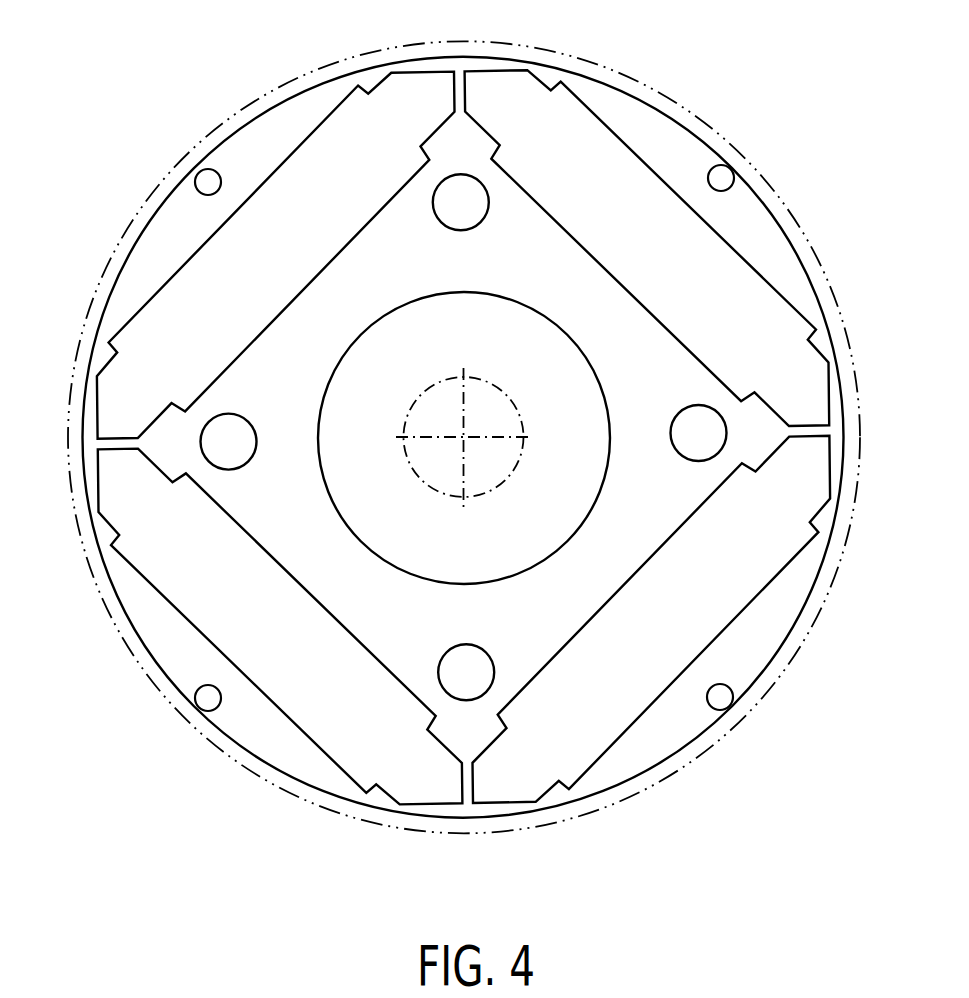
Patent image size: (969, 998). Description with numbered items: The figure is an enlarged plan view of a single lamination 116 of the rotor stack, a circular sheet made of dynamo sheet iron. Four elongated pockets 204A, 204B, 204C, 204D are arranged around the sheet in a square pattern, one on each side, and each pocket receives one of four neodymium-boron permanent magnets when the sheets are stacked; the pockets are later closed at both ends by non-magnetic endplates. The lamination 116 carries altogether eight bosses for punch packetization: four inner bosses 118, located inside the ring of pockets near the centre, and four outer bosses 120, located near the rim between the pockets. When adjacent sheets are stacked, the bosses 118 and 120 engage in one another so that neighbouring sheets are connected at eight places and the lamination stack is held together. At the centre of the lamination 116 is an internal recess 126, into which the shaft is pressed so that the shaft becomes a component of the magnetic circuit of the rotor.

The lamination 116 is at (172, 78).
The inner bosses 118 is at (433, 203).
The outer bosses 120 is at (196, 183).
The internal recess 126 is at (565, 538).
The pocket 204A is at (632, 152).
The pocket 204B is at (658, 699).
The pocket 204C is at (284, 711).
The pocket 204D is at (160, 297).